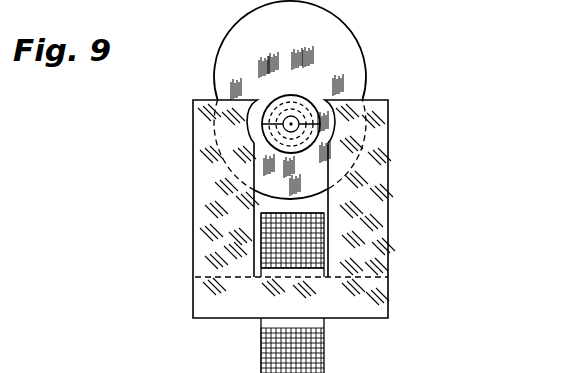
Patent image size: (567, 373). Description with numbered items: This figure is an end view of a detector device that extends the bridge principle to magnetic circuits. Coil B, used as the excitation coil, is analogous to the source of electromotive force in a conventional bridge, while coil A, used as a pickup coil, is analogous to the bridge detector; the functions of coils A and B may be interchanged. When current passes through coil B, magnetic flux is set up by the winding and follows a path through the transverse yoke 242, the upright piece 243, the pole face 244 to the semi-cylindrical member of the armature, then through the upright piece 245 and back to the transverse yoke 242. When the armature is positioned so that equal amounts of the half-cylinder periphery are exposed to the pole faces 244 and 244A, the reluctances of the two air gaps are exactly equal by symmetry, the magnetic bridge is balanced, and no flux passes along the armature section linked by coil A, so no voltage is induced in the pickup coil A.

The transverse yoke 242 is at (288, 294).
The upright piece 243 is at (210, 214).
The pole face 244 is at (256, 101).
The pole face 244A is at (322, 92).
The upright piece 245 is at (378, 200).
The coil A is at (341, 71).
The coil B is at (308, 352).